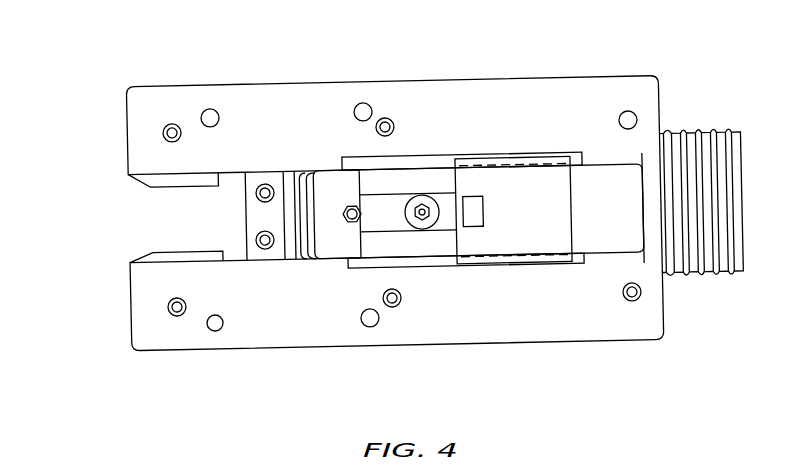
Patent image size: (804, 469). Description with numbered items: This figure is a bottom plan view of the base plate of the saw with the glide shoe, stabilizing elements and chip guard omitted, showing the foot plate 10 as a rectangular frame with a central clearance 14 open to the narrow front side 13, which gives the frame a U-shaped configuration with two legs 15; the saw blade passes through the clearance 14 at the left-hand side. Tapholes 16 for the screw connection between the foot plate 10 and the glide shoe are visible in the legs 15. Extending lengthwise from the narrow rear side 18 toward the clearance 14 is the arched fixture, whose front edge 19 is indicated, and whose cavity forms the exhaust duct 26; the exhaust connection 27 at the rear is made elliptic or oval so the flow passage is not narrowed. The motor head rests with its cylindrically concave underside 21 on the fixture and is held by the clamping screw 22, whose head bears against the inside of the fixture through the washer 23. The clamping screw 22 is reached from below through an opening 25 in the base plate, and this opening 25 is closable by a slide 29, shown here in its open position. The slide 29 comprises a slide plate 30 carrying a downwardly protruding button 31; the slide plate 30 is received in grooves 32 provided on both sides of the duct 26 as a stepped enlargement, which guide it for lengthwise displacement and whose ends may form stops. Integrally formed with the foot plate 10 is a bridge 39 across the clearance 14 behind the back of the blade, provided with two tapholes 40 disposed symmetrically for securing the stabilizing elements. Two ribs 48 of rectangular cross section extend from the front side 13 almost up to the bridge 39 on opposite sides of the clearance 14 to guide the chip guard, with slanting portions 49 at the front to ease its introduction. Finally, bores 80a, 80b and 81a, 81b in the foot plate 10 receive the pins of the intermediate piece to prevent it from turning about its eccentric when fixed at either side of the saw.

The foot plate 10 is at (274, 112).
The narrow side 13 is at (127, 96).
The central clearance 14 is at (165, 207).
The legs 15 is at (144, 123).
The tapholes 16 is at (174, 119).
The narrow rear side 18 is at (664, 106).
The front edge of the fixture 19 is at (302, 246).
The underside of motor head 21 is at (360, 293).
The clamping screw 22 is at (460, 299).
The washer 23 is at (410, 302).
The opening 25 is at (423, 154).
The exhaust duct 26 is at (613, 313).
The connection 27 is at (733, 222).
The slide 29 is at (554, 156).
The slide plate 30 is at (547, 210).
The button 31 is at (478, 199).
The grooves 32 is at (443, 158).
The bridge 39 is at (254, 250).
The tapholes 40 is at (265, 246).
The ribs 48 is at (192, 251).
The slanting portions 49 is at (141, 253).
The bore 80a is at (214, 310).
The bore 80b is at (212, 105).
The bore 81a is at (371, 325).
The bore 81b is at (365, 102).